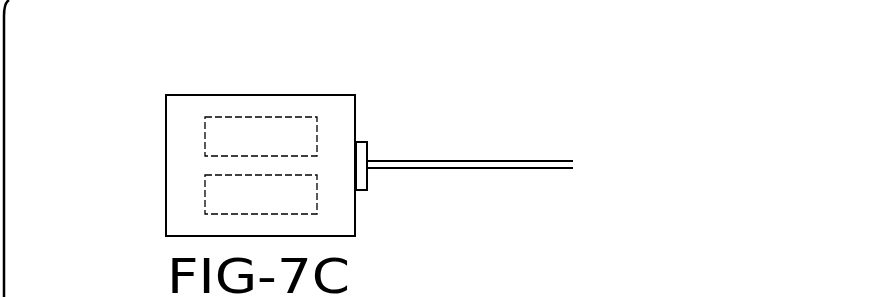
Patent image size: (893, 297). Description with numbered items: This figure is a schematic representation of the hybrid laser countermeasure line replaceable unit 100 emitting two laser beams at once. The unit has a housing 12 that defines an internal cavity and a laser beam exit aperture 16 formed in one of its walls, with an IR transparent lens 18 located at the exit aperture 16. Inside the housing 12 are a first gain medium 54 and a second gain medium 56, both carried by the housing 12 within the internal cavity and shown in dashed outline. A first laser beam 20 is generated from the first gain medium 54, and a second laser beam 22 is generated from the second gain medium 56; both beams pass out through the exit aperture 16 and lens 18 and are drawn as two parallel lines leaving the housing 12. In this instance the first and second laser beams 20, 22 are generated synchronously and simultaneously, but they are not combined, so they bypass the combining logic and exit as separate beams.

The hybrid laser countermeasure line replaceable unit 100 is at (328, 131).
The housing 12 is at (313, 92).
The first gain medium 54 is at (213, 137).
The second gain medium 56 is at (213, 195).
The laser beam exit aperture 16 is at (423, 159).
The IR transparent lens 18 is at (370, 147).
The first laser beam 20 is at (515, 160).
The second laser beam 22 is at (533, 170).